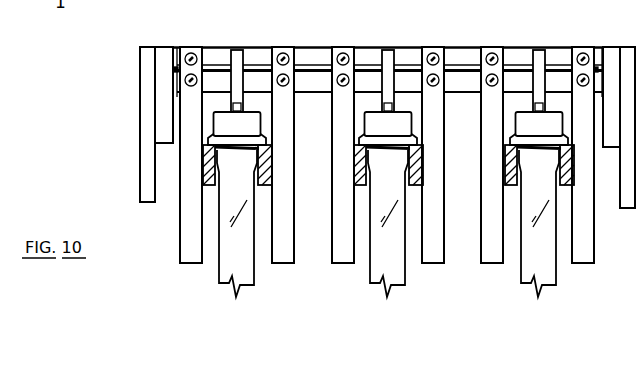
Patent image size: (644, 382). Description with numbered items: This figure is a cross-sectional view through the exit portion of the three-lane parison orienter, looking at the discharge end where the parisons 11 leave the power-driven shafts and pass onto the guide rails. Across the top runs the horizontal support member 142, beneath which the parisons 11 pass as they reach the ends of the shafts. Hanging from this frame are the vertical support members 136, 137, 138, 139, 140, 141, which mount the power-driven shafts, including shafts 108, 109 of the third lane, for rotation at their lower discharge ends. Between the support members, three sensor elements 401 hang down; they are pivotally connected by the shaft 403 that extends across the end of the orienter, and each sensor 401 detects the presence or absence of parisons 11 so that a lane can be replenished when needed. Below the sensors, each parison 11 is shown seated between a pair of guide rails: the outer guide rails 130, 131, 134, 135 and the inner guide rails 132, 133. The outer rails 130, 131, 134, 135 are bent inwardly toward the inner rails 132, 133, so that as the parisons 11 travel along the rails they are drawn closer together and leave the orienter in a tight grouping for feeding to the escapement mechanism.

The parison 11 is at (222, 268).
The power-driven shaft 108 is at (24, 6).
The power-driven shaft 109 is at (53, 24).
The outer guide rail 130 is at (570, 183).
The outer guide rail 131 is at (508, 165).
The guide rail 132 is at (420, 168).
The guide rail 133 is at (358, 163).
The outer guide rail 134 is at (269, 168).
The outer guide rail 135 is at (207, 186).
The support member 136 is at (186, 260).
The support member 137 is at (283, 263).
The support member 138 is at (343, 263).
The support member 139 is at (433, 263).
The support member 140 is at (492, 263).
The support member 141 is at (583, 263).
The horizontal support member 142 is at (303, 50).
The sensor element 401 is at (237, 55).
The shaft 403 is at (322, 68).